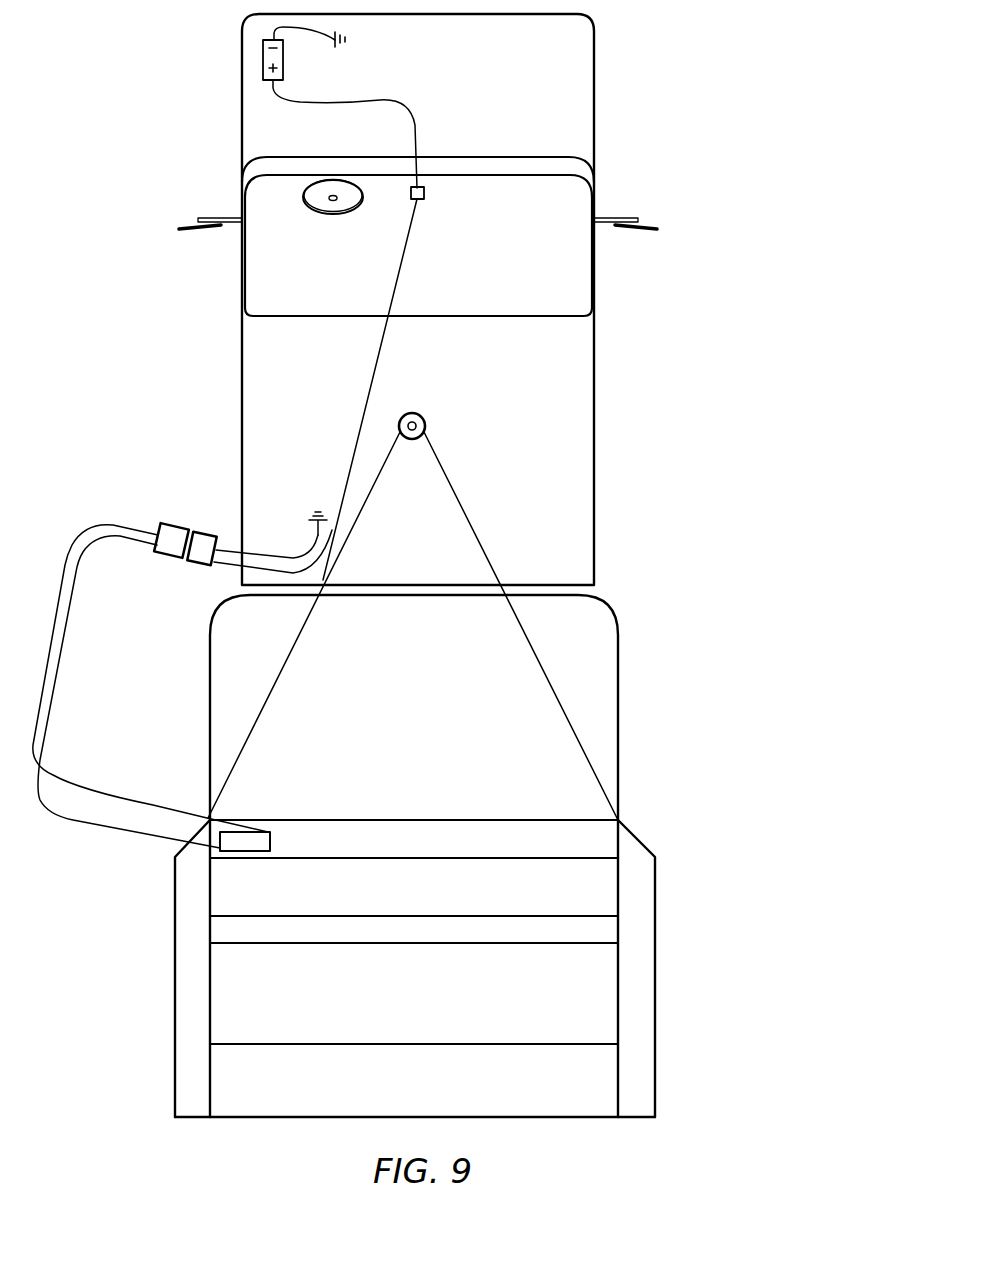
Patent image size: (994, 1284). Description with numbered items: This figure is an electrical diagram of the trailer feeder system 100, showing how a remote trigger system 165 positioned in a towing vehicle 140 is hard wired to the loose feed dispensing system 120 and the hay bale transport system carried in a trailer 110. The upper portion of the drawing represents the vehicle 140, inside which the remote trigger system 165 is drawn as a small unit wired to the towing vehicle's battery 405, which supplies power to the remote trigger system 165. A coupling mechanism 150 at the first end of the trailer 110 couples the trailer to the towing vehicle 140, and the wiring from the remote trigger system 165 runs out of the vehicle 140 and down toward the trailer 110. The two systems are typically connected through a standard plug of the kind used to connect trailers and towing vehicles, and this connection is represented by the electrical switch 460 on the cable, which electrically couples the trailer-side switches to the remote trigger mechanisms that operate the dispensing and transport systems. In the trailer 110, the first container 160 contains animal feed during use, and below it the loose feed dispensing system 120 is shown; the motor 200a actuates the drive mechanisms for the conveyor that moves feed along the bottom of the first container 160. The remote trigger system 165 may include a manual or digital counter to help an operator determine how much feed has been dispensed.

The trailer feeder system 100 is at (172, 704).
The trailer 110 is at (618, 760).
The loose feed dispensing system 120 is at (428, 905).
The vehicle 140 is at (594, 73).
The coupling mechanism 150 is at (450, 465).
The first container 160 is at (428, 855).
The remote trigger system 165 is at (424, 193).
The motor 200a is at (270, 840).
The battery 405 is at (284, 61).
The electrical switch 460 is at (167, 557).